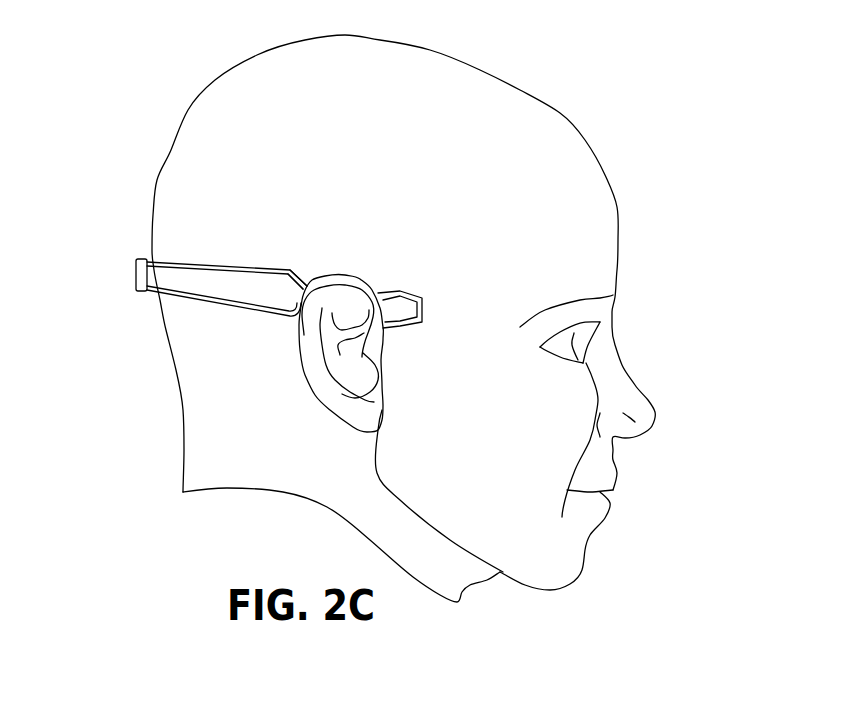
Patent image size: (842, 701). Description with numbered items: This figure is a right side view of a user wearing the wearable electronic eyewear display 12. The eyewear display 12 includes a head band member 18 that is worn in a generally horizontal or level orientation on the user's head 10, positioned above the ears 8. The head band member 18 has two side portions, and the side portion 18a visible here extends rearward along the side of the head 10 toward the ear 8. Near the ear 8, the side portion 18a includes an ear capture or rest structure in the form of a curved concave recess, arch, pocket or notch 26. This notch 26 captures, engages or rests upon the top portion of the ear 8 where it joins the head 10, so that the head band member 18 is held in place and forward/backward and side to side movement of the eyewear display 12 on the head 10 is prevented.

The ears 8 is at (330, 408).
The user's head 10 is at (542, 113).
The wearable electronic eyewear display 12 is at (238, 253).
The head band member 18 is at (203, 269).
The side portion 18a is at (243, 283).
The notch 26 is at (307, 277).